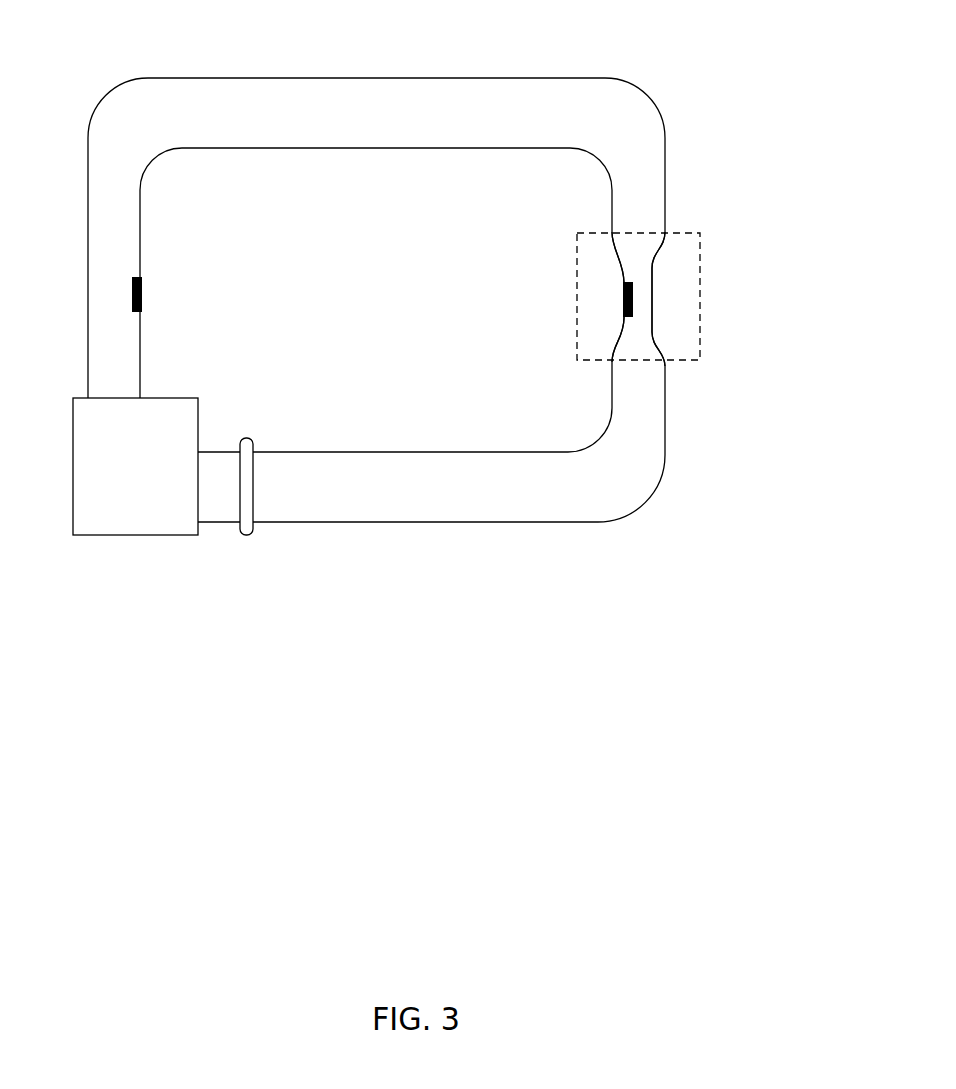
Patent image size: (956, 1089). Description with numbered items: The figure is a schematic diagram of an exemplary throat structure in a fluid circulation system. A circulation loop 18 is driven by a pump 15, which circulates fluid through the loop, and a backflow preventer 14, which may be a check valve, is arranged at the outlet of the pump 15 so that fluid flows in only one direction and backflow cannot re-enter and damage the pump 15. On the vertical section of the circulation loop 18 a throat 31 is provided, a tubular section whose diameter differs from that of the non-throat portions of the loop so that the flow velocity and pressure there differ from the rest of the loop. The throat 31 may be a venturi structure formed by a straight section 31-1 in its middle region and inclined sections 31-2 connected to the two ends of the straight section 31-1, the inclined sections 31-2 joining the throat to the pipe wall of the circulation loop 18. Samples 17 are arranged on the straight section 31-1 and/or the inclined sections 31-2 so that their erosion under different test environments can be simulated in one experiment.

The circulation loop 18 is at (265, 100).
The throat 31 is at (691, 226).
The inclined sections 31-2 is at (658, 252).
The straight section 31-1 is at (655, 308).
The samples 17 is at (627, 317).
The pump 15 is at (122, 512).
The backflow preventer 14 is at (245, 538).